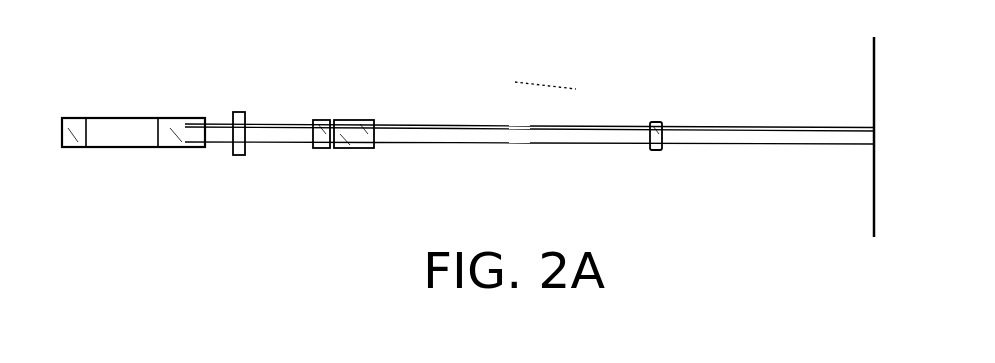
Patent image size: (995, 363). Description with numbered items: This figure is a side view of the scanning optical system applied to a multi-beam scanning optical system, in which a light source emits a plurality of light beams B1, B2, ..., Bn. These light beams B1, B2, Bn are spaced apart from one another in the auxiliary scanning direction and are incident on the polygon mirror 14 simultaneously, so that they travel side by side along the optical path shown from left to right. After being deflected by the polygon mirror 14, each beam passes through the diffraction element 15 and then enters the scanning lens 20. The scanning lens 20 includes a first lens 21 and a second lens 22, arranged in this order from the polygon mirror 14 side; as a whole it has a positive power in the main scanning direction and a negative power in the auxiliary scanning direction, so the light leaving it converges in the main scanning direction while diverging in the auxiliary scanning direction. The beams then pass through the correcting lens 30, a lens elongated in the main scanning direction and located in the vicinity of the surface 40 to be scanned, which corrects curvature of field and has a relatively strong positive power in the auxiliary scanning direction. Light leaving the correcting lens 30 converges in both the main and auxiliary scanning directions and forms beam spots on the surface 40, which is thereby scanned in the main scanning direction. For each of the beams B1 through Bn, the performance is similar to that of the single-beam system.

The polygon mirror 14 is at (117, 148).
The diffraction element 15 is at (238, 155).
The scanning lens 20 is at (351, 181).
The first lens 21 is at (320, 148).
The second lens 22 is at (362, 159).
The correcting lens 30 is at (653, 150).
The surface to be scanned 40 is at (874, 78).
The light beam B1 is at (413, 123).
The light beam B2 is at (478, 124).
The light beam Bn is at (611, 142).